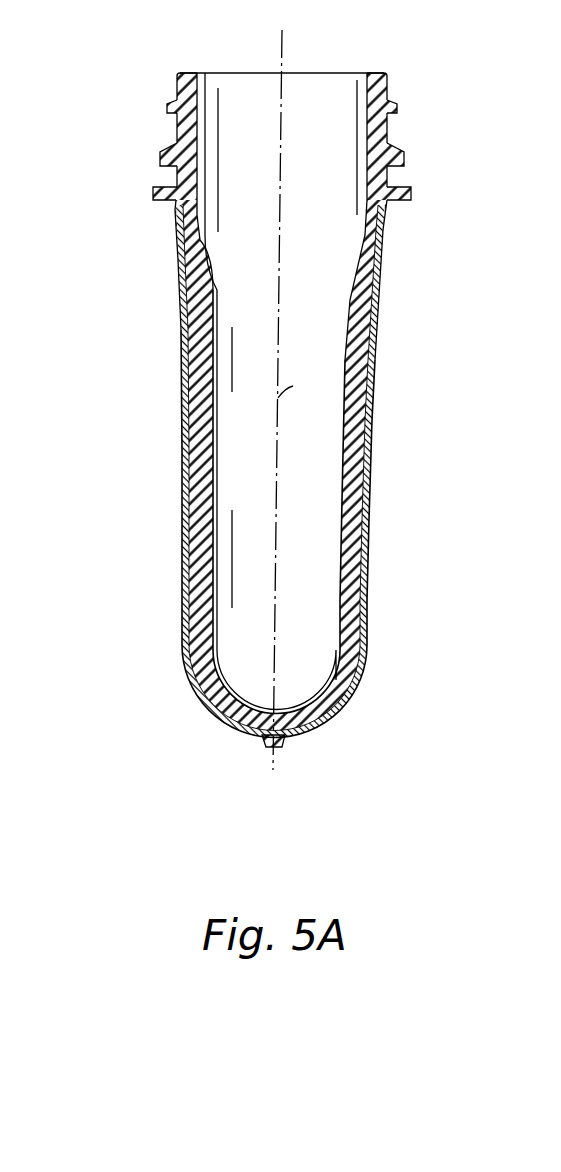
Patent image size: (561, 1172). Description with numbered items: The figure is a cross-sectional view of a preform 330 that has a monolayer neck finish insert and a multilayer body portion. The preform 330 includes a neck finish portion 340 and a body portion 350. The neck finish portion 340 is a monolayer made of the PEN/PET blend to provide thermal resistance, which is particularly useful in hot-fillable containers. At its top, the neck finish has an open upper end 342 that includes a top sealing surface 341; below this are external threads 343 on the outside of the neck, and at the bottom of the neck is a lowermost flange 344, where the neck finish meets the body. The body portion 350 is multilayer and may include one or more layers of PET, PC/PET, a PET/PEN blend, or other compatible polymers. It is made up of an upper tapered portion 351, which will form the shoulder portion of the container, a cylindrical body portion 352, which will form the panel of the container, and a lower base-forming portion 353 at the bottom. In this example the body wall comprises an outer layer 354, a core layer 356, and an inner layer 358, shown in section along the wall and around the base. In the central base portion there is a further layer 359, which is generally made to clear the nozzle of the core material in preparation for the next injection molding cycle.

The preform 330 is at (407, 322).
The neck finish portion 340 is at (138, 72).
The top sealing surface 341 is at (380, 73).
The open upper end 342 is at (323, 73).
The external threads 343 is at (398, 110).
The lowermost flange 344 is at (406, 203).
The body portion 350 is at (132, 737).
The upper tapered portion 351 is at (383, 263).
The cylindrical body portion 352 is at (376, 472).
The lower base-forming portion 353 is at (337, 716).
The outer layer 354 is at (181, 404).
The core layer 356 is at (192, 432).
The inner layer 358 is at (214, 433).
The further layer 359 is at (278, 748).